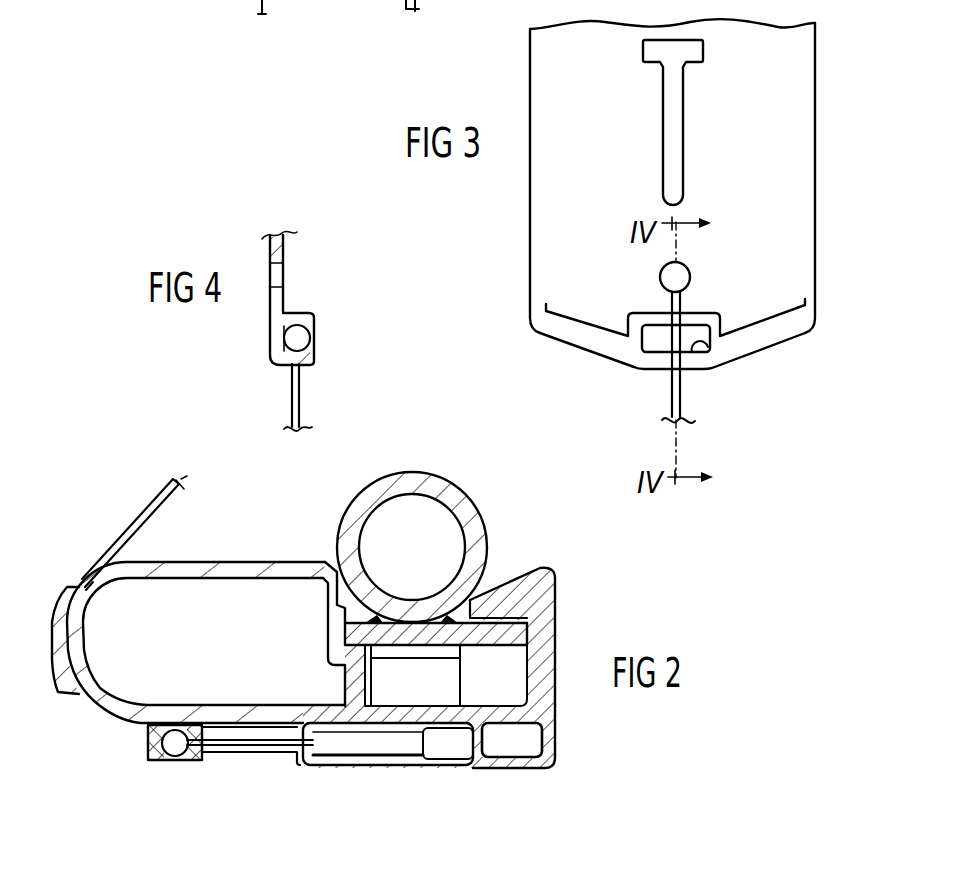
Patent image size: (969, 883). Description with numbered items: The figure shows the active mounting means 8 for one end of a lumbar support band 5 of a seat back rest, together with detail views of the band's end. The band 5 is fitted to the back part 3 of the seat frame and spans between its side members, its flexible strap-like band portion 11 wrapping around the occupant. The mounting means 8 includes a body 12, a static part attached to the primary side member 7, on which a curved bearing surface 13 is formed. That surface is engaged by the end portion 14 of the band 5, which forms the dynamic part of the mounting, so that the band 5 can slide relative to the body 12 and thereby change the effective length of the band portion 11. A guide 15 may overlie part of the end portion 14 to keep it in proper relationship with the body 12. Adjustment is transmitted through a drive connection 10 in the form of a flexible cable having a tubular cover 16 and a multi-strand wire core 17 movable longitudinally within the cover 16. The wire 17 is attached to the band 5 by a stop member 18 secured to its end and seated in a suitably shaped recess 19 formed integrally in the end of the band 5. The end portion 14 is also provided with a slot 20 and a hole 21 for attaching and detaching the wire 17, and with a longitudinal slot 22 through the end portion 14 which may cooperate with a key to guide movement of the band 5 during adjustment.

In FIG. 2, the back part 3 is at (480, 490).
In FIG. 3, the lumbar support band 5 is at (512, 70).
In FIG. 2, the lumbar support band 5 is at (128, 515).
In FIG. 2, the primary side member 7 is at (472, 530).
In FIG. 2, the active mounting means 8 is at (294, 545).
In FIG. 2, the drive connection 10 is at (233, 757).
In FIG. 2, the band portion 11 is at (157, 502).
In FIG. 2, the body 12 is at (217, 553).
In FIG. 2, the curved bearing surface 13 is at (96, 580).
In FIG. 3, the end portion 14 is at (548, 190).
In FIG. 2, the end portion 14 is at (98, 710).
In FIG. 2, the guide 15 is at (52, 675).
In FIG. 2, the tubular cover 16 is at (355, 748).
In FIG. 3, the wire core 17 is at (675, 400).
In FIG. 4, the wire core 17 is at (297, 403).
In FIG. 2, the wire core 17 is at (262, 746).
In FIG. 3, the stop member 18 is at (660, 340).
In FIG. 4, the stop member 18 is at (300, 338).
In FIG. 2, the stop member 18 is at (175, 752).
In FIG. 3, the recess 19 is at (707, 344).
In FIG. 4, the recess 19 is at (310, 350).
In FIG. 2, the recess 19 is at (153, 752).
In FIG. 3, the slot 20 is at (682, 303).
In FIG. 4, the slot 20 is at (277, 305).
In FIG. 3, the hole 21 is at (688, 278).
In FIG. 4, the hole 21 is at (278, 272).
In FIG. 3, the longitudinal slot 22 is at (676, 122).